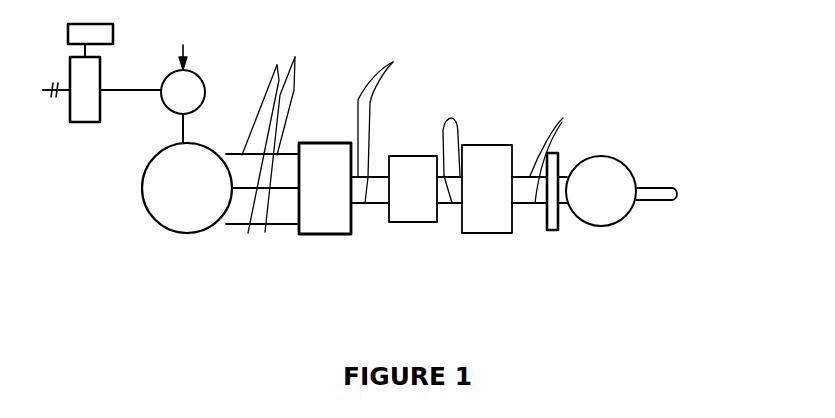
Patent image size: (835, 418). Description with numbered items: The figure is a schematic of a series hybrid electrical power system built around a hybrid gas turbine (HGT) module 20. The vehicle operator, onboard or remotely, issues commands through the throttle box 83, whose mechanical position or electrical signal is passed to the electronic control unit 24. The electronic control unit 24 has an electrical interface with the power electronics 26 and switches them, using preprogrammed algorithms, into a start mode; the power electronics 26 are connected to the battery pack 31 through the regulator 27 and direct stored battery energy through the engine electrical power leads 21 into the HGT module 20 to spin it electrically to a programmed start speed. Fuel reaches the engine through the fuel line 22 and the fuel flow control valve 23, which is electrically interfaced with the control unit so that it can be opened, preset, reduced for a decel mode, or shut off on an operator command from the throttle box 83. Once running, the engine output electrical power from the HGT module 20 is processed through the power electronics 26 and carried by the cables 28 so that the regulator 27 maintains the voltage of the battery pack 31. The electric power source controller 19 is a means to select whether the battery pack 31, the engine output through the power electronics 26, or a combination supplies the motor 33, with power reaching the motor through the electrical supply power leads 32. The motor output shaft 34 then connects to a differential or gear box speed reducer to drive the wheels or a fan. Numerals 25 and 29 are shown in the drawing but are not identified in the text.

The electric power source controller (EPSC) 19 is at (553, 222).
The hybrid gas turbine (HGT) module 20 is at (152, 218).
The engine electrical power leads 21 is at (277, 65).
The fuel line 22 is at (184, 46).
The fuel flow control valve 23 is at (197, 73).
The electronic control unit (ECU) 24 is at (85, 122).
The fuel line 25 is at (177, 124).
The power electronics 26 is at (316, 223).
The voltage regulator 27 is at (413, 213).
The cables 28 is at (393, 62).
The coupling 29 is at (452, 118).
The battery pack 31 is at (493, 152).
The electrical supply power leads 32 is at (563, 118).
The motor 33 is at (600, 223).
The motor output shaft 34 is at (658, 192).
The throttle box 83 is at (71, 46).